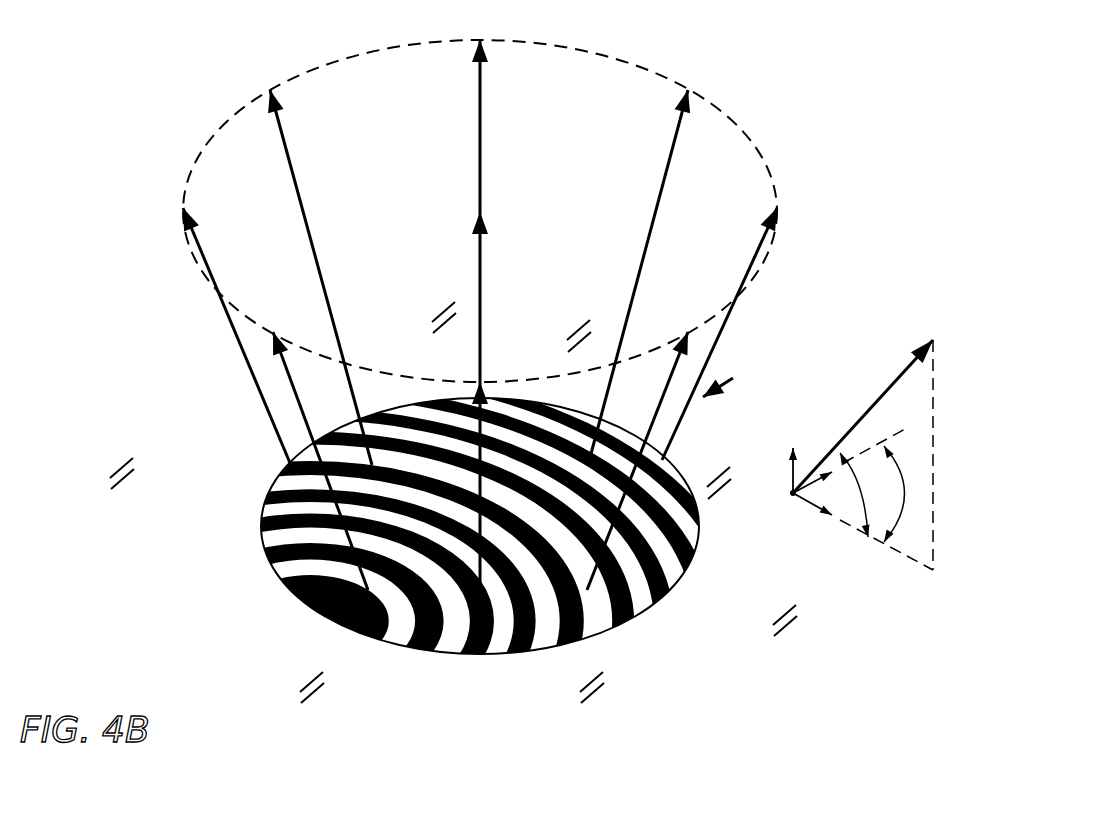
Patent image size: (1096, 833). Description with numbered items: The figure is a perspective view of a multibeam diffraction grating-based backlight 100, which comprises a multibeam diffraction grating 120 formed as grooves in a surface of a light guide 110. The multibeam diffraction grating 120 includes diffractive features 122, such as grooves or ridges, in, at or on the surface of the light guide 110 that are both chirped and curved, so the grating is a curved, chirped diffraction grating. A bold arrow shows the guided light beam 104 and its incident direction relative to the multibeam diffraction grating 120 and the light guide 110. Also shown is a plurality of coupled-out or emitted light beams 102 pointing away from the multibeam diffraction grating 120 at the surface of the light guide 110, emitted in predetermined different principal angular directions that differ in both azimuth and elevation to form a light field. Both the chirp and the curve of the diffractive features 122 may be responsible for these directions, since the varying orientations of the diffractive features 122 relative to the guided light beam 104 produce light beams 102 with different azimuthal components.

The multibeam diffraction grating-based backlight 100 is at (795, 174).
The emitted light beams 102 is at (288, 146).
The guided light beam 104 is at (733, 378).
The light guide 110 is at (786, 591).
The multibeam diffraction grating 120 is at (258, 470).
The diffractive features 122 is at (627, 613).